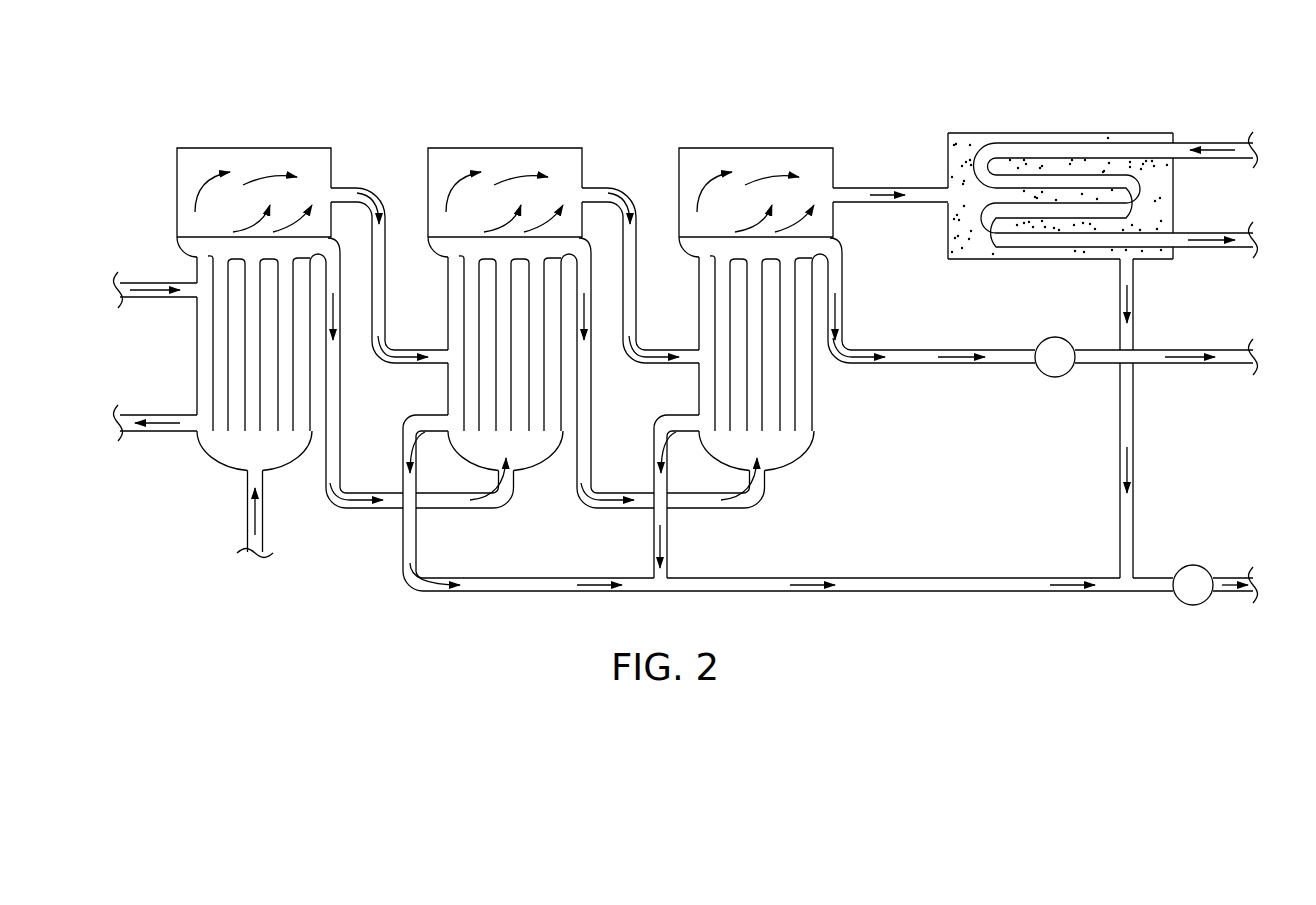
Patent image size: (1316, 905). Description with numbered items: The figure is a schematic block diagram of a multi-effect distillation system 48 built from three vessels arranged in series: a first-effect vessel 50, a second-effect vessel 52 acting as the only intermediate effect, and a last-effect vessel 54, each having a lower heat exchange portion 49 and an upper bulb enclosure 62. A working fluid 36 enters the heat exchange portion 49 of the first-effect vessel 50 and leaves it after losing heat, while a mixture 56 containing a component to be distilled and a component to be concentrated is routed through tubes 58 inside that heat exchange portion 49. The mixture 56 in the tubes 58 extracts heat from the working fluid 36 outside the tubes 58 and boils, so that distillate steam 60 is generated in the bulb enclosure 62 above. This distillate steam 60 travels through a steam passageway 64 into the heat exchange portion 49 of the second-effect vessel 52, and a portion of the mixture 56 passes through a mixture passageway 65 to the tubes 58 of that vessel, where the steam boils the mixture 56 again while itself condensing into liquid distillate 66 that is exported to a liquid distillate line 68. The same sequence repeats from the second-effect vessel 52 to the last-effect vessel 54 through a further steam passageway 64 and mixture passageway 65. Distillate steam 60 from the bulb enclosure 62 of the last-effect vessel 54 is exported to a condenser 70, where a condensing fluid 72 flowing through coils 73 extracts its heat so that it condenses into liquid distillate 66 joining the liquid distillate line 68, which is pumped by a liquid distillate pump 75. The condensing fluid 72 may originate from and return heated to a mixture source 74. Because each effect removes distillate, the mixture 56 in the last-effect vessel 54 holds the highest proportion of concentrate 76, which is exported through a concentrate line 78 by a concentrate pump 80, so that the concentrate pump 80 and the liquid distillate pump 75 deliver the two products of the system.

The working fluid 36 is at (150, 283).
The multi-effect distillation system 48 is at (930, 60).
The heat exchange portion 49 is at (177, 388).
The first-effect vessel 50 is at (255, 148).
The second-effect vessel 52 is at (506, 148).
The last-effect vessel 54 is at (757, 148).
The mixture 56 is at (246, 521).
The tubes 58 is at (280, 377).
The distillate steam 60 is at (377, 197).
The bulb enclosure 62 is at (194, 176).
The steam passageway 64 is at (385, 283).
The mixture passageway 65 is at (390, 510).
The liquid distillate 66 is at (418, 434).
The liquid distillate line 68 is at (487, 595).
The condenser 70 is at (1060, 133).
The condensing fluid 72 is at (1223, 150).
The coils 73 is at (1004, 143).
The mixture source 74 is at (1277, 195).
The liquid distillate pump 75 is at (1193, 606).
The concentrate 76 is at (958, 351).
The concentrate line 78 is at (910, 365).
The concentrate pump 80 is at (1055, 378).